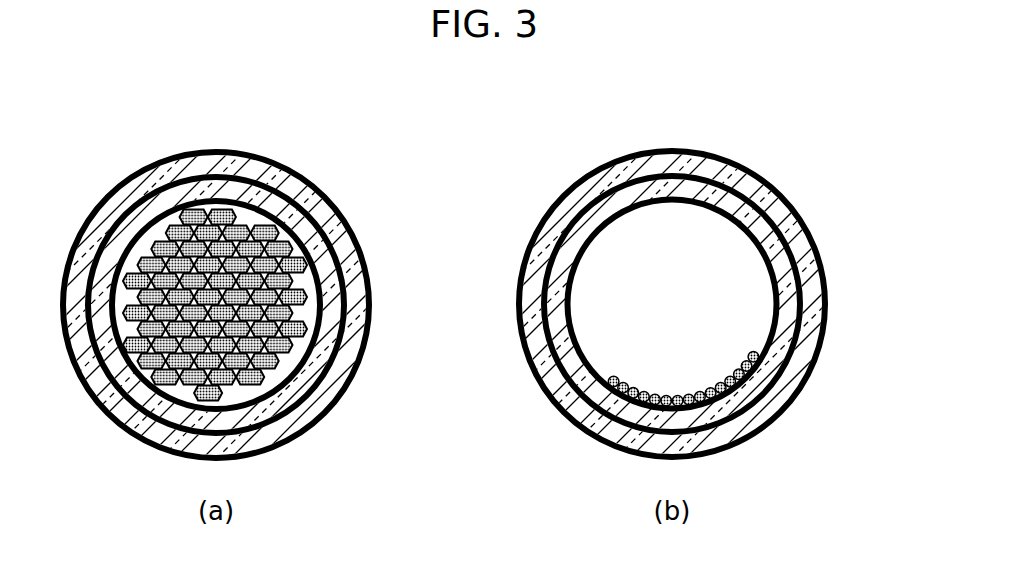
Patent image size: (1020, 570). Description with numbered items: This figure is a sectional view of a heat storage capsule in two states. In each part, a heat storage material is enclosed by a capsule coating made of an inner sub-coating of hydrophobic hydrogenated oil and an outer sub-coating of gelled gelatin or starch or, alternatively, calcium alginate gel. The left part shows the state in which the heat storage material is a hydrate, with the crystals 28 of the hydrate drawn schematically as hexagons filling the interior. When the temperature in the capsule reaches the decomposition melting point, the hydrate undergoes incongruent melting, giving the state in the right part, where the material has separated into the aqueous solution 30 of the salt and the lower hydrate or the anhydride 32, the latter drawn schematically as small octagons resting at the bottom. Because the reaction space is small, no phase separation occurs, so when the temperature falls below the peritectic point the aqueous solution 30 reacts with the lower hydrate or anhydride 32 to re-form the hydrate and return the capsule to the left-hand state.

The crystals 28 is at (300, 292).
The aqueous solution 30 is at (710, 327).
The lower hydrate or anhydride 32 is at (756, 352).